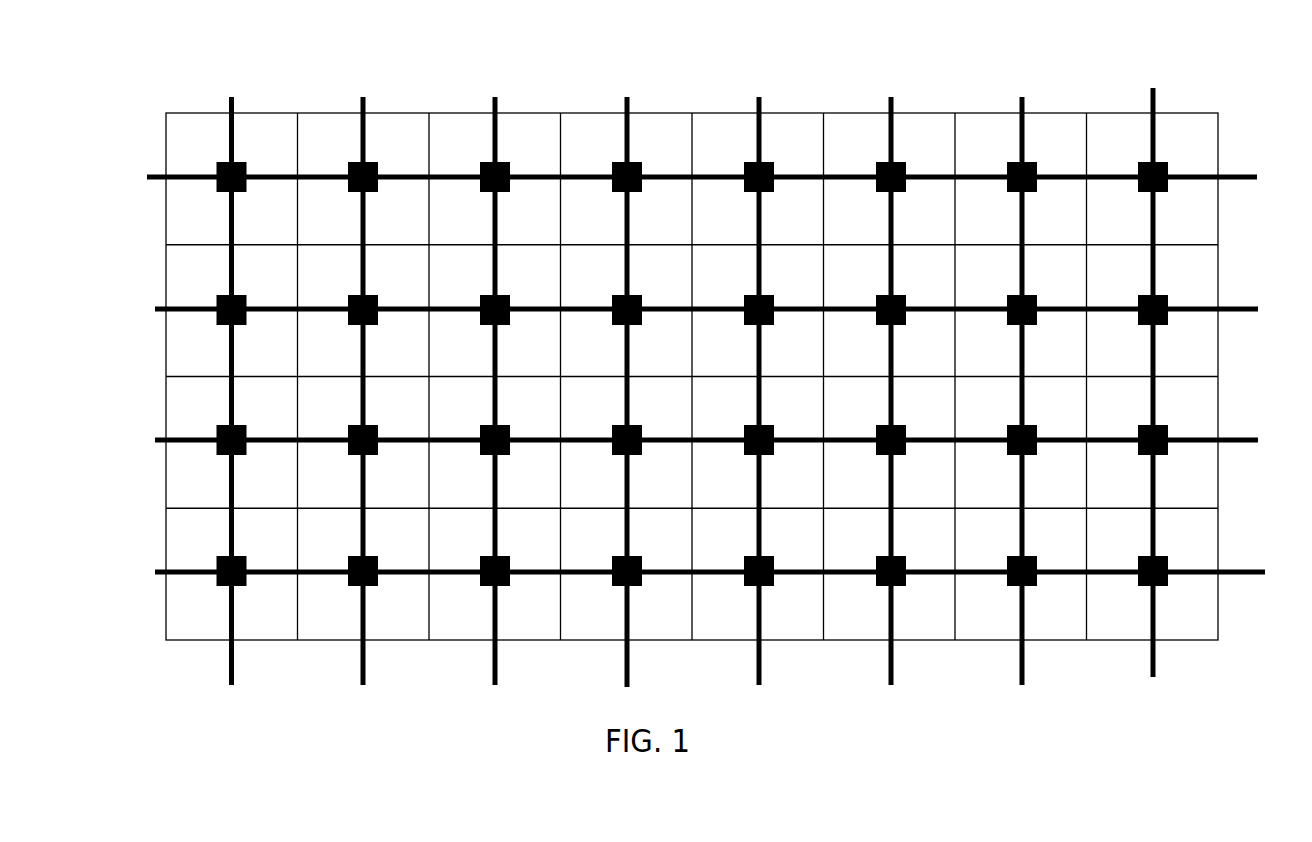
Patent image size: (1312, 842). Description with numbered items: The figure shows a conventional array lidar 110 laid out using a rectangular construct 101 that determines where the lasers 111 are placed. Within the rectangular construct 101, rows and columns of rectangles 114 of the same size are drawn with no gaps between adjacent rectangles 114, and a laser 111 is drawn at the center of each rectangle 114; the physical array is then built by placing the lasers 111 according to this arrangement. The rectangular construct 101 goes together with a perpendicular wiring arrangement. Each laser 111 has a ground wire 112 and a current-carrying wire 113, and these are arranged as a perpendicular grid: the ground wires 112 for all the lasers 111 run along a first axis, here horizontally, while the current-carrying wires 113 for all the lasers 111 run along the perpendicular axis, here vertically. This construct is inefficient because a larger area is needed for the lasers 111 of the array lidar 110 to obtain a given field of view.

The array lidar 110 is at (114, 99).
The rectangular construct 101 is at (1218, 122).
The laser 111 is at (213, 298).
The ground wire 112 is at (1249, 584).
The current-carrying wire 113 is at (1168, 667).
The rectangle 114 is at (185, 353).